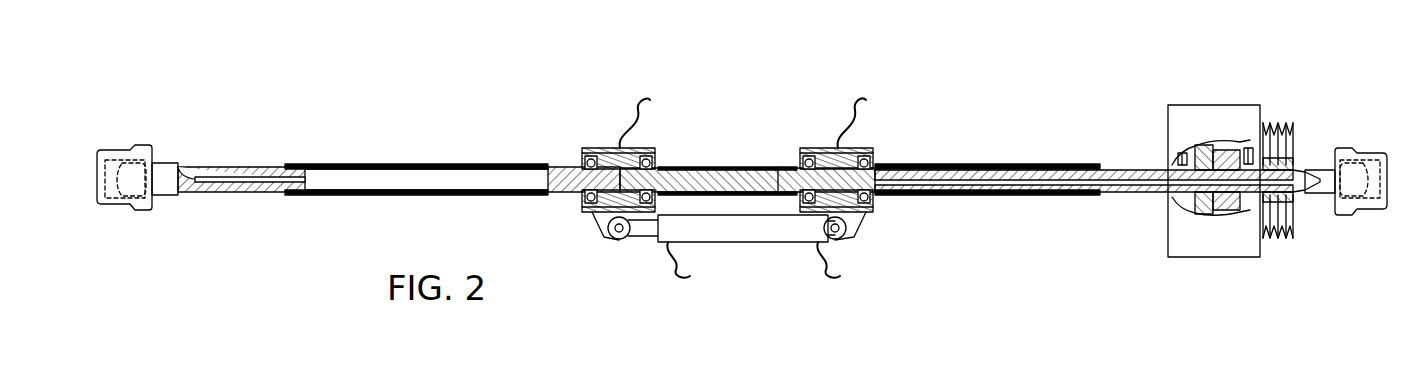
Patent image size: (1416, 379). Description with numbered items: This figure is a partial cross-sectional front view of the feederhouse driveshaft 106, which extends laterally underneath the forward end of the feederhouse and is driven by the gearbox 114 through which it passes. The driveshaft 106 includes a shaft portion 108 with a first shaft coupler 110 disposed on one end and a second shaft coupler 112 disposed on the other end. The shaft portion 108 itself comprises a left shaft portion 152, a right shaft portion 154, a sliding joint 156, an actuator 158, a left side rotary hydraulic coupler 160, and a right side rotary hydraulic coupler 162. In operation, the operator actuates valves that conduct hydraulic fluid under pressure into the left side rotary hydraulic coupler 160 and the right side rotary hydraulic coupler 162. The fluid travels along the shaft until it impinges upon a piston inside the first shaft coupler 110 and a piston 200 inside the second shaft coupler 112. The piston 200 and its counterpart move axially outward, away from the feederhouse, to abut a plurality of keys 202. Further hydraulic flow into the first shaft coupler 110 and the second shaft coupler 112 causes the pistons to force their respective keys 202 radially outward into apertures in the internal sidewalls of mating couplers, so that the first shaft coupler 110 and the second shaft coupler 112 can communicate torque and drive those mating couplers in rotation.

The driveshaft 106 is at (827, 87).
The shaft portion 108 is at (737, 160).
The first shaft coupler 110 is at (1345, 148).
The second shaft coupler 112 is at (150, 146).
The gearbox 114 is at (1215, 105).
The left shaft portion 152 is at (1028, 108).
The right shaft portion 154 is at (430, 105).
The sliding joint 156 is at (703, 106).
The actuator 158 is at (723, 242).
The left side rotary hydraulic coupler 160 is at (870, 148).
The right side rotary hydraulic coupler 162 is at (600, 148).
The piston 200 is at (153, 210).
The keys 202 is at (113, 150).